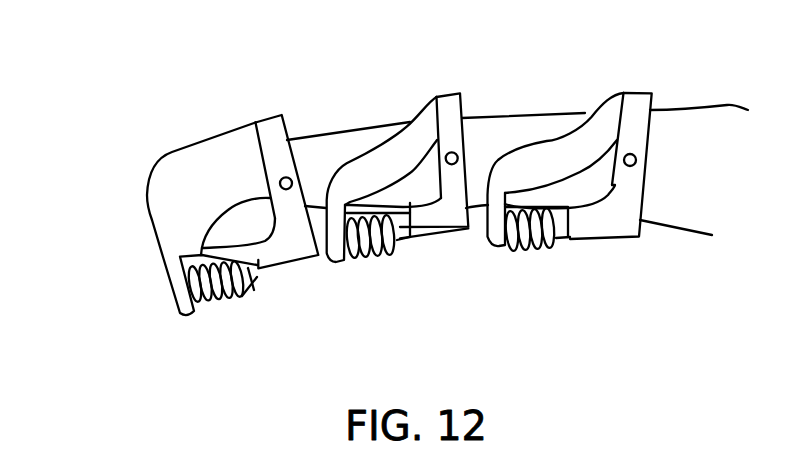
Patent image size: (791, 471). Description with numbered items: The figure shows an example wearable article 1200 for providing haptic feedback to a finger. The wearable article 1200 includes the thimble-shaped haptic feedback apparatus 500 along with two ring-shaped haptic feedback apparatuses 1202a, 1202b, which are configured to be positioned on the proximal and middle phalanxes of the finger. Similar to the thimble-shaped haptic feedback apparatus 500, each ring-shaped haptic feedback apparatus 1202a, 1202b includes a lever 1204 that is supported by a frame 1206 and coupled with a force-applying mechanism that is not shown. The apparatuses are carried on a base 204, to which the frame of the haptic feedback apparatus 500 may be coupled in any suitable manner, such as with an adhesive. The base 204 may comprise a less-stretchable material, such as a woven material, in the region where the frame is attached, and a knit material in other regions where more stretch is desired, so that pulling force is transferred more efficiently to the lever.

The wearable article 1200 is at (66, 105).
The haptic feedback apparatus 500 is at (202, 112).
The ring-shaped haptic feedback apparatus 1202a is at (378, 70).
The ring-shaped haptic feedback apparatus 1202b is at (565, 67).
The frame 1206 is at (605, 96).
The lever 1204 is at (648, 140).
The base 204 is at (667, 224).